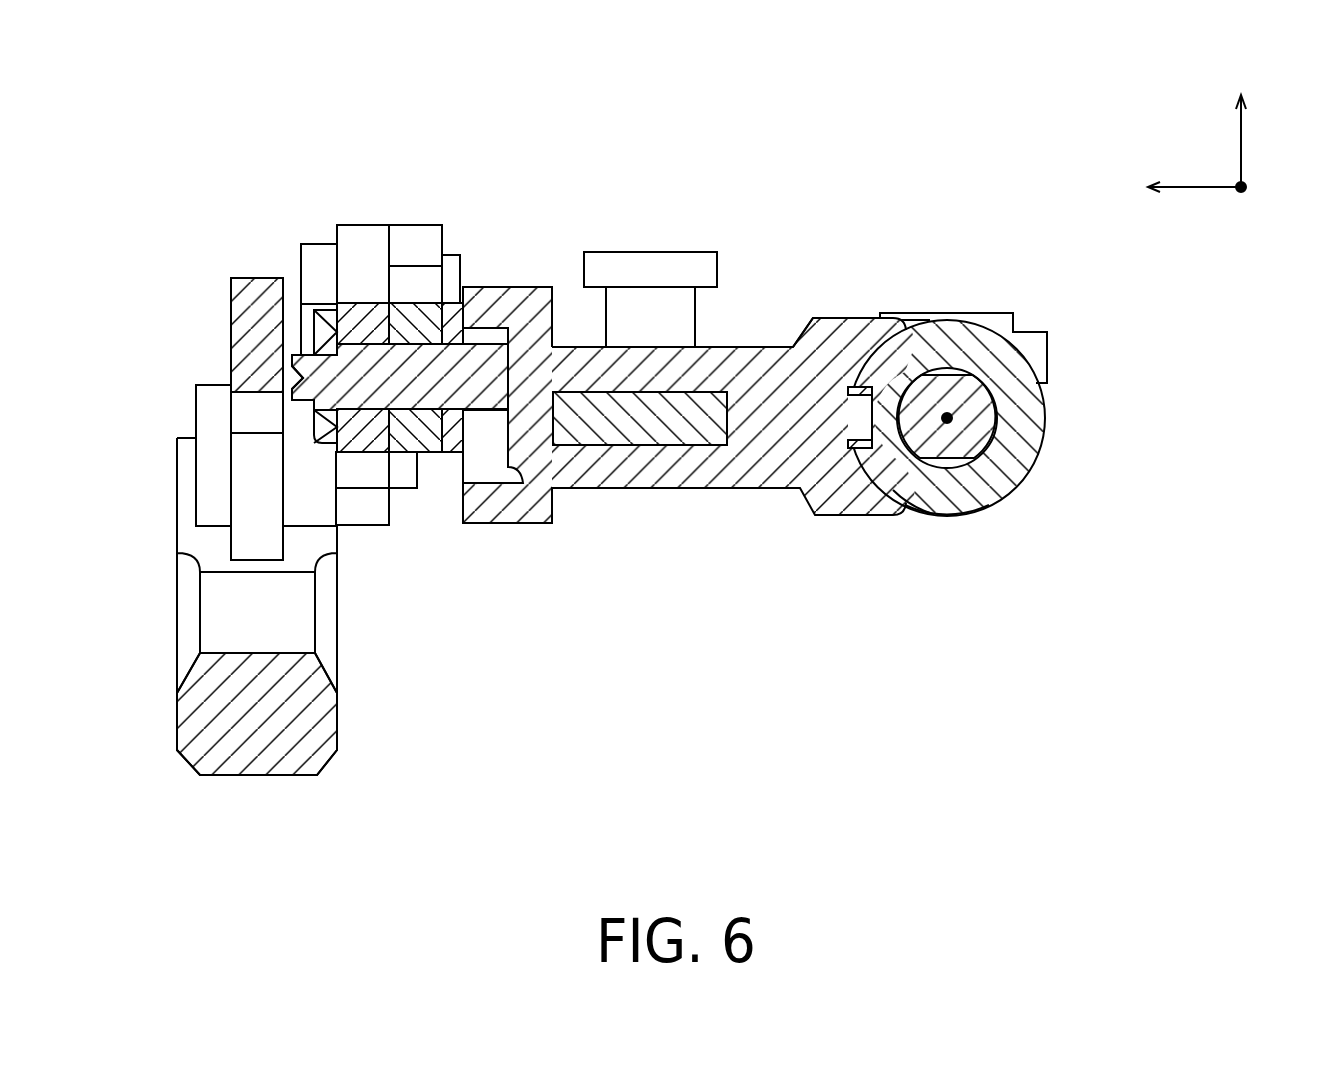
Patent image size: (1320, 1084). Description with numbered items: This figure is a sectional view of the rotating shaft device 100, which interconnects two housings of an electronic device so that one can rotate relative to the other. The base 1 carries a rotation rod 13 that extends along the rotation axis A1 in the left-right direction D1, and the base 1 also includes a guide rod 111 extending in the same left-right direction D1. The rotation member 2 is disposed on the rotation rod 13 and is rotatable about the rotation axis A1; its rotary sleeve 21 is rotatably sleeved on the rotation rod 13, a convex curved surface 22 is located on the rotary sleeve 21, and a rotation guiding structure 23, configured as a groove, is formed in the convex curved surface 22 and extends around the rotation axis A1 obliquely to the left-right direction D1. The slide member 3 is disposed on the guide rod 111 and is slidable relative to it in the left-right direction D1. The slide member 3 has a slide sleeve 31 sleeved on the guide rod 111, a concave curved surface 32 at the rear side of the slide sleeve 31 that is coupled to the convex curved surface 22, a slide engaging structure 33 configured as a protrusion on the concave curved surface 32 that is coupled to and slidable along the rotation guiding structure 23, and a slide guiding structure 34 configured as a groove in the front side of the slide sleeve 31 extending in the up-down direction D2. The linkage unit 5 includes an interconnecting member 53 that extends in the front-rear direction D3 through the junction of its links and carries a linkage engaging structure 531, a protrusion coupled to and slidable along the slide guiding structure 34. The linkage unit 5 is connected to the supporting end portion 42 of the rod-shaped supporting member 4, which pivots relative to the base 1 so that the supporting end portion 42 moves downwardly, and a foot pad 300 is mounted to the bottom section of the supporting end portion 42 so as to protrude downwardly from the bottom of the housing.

The rotating shaft device 100 is at (951, 74).
The base 1 is at (821, 411).
The rotation rod 13 is at (977, 432).
The rotation member 2 is at (821, 435).
The rotary sleeve 21 is at (942, 490).
The convex curved surface 22 is at (868, 483).
The rotation guiding structure 23 is at (928, 492).
The slide member 3 is at (740, 431).
The slide sleeve 31 is at (633, 468).
The concave curved surface 32 is at (870, 352).
The slide engaging structure 33 is at (860, 417).
The slide guiding structure 34 is at (520, 470).
The guide rod 111 is at (653, 420).
The supporting member 4 is at (286, 543).
The supporting end portion 42 is at (257, 540).
The linkage unit 5 is at (367, 250).
The interconnecting member 53 is at (450, 396).
The linkage engaging structure 531 is at (497, 390).
The foot pad 300 is at (247, 776).
The rotation axis A1 is at (951, 426).
The left-right direction D1 is at (1267, 202).
The up-down direction D2 is at (1241, 120).
The front-rear direction D3 is at (1172, 187).